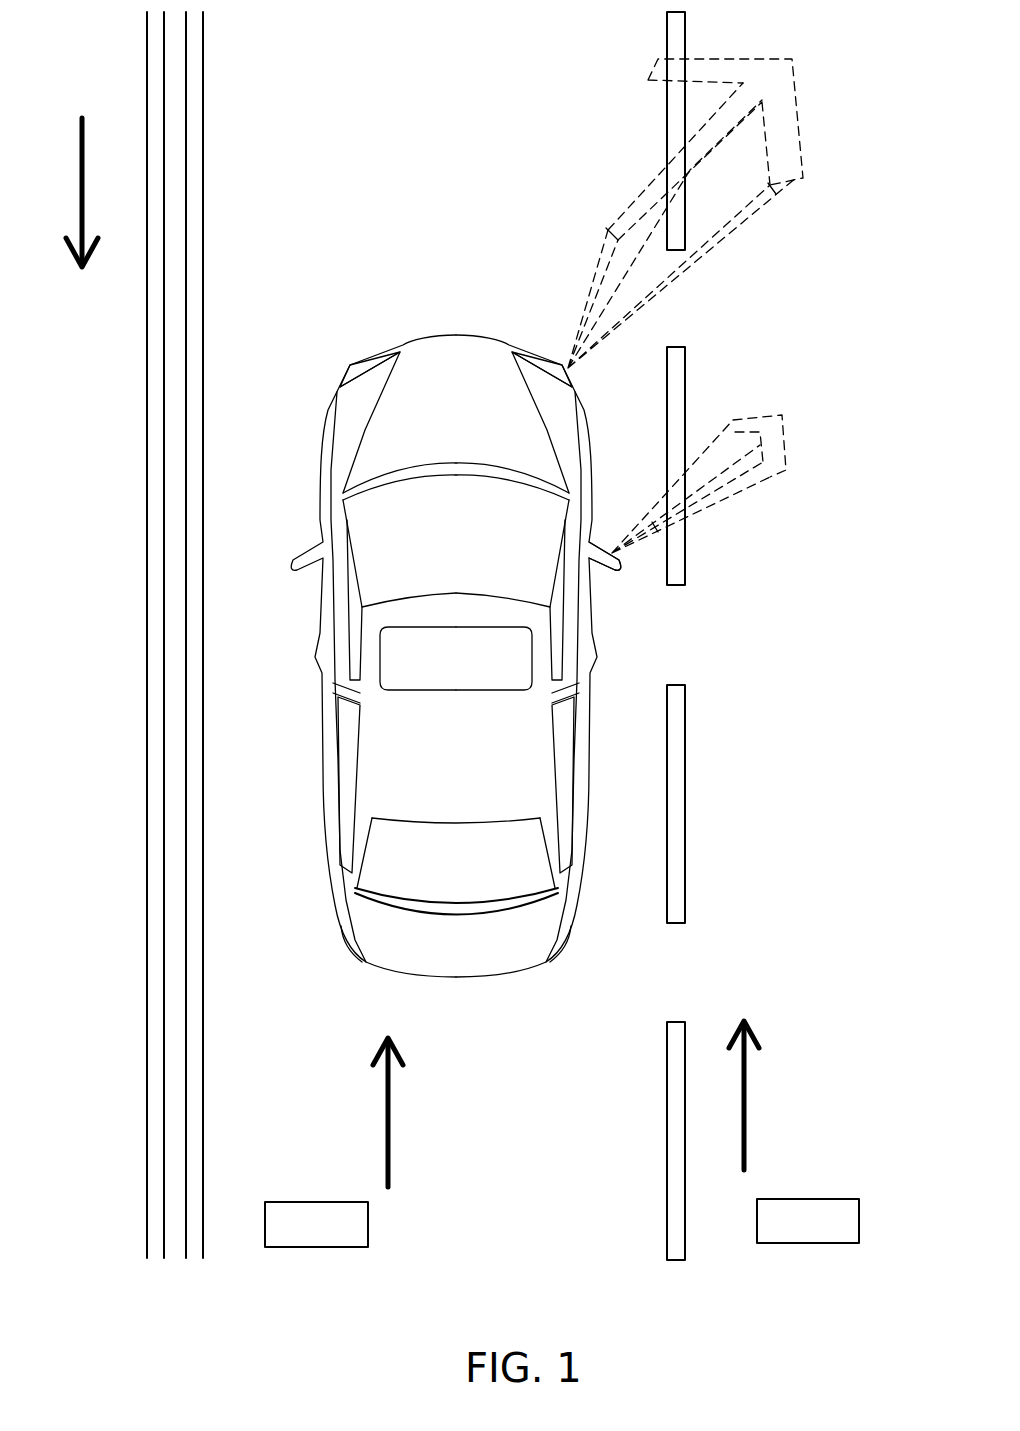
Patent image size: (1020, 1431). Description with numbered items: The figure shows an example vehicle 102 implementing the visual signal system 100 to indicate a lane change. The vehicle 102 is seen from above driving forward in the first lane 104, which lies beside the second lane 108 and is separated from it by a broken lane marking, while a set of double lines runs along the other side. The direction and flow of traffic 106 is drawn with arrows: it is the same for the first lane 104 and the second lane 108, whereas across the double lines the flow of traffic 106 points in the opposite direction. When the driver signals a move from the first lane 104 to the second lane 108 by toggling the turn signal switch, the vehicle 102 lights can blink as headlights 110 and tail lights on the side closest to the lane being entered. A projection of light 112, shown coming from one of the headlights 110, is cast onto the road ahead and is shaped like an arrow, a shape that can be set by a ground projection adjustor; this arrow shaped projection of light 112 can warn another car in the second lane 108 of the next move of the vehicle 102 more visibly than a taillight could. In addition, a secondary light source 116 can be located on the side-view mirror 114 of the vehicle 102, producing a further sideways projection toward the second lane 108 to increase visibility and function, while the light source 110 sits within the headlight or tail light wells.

The visual signal system 100 is at (540, 1333).
The vehicle 102 is at (530, 958).
The lane 1 104 is at (328, 1247).
The direction and flow of traffic 106 is at (83, 143).
The lane 2 108 is at (783, 1243).
The headlights 110 is at (363, 362).
The projection of light 112 is at (800, 137).
The side-view mirror 114 is at (603, 565).
The secondary light source 116 is at (784, 440).